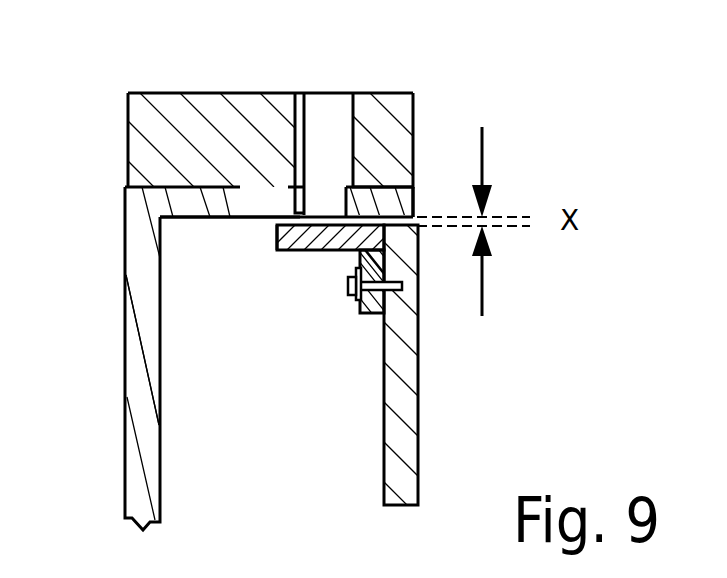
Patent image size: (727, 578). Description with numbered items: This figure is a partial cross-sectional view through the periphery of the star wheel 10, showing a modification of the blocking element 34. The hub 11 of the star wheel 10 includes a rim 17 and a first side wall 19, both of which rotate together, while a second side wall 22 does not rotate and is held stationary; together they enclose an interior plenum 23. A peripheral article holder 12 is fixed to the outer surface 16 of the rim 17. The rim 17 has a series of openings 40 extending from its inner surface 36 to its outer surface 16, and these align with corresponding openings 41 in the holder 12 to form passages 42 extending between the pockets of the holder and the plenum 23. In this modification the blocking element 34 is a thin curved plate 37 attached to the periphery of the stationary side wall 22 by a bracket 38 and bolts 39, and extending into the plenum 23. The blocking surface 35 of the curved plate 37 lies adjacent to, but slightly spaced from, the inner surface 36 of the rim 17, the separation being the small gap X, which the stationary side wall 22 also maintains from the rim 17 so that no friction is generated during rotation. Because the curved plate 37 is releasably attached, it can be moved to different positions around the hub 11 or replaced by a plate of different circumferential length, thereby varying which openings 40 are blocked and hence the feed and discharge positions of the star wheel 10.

The star wheel 10 is at (124, 68).
The hub 11 is at (124, 305).
The peripheral article holder 12 is at (190, 93).
The outer surface of the rim 16 is at (156, 186).
The rim 17 is at (405, 205).
The first side wall 19 is at (142, 390).
The second side wall 22 is at (400, 392).
The interior plenum 23 is at (215, 431).
The blocking element 34 is at (327, 242).
The blocking surface 35 is at (287, 215).
The inner surface of the rim 36 is at (228, 218).
The curved plate 37 is at (282, 250).
The bracket 38 is at (366, 314).
The bolts 39 is at (346, 292).
The openings 40 is at (328, 200).
The openings 41 is at (328, 102).
The passages 42 is at (314, 95).